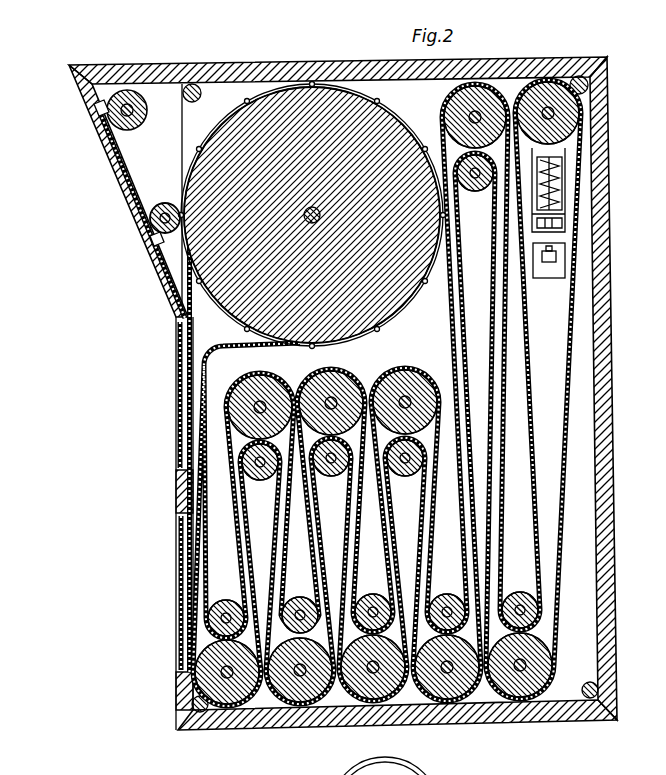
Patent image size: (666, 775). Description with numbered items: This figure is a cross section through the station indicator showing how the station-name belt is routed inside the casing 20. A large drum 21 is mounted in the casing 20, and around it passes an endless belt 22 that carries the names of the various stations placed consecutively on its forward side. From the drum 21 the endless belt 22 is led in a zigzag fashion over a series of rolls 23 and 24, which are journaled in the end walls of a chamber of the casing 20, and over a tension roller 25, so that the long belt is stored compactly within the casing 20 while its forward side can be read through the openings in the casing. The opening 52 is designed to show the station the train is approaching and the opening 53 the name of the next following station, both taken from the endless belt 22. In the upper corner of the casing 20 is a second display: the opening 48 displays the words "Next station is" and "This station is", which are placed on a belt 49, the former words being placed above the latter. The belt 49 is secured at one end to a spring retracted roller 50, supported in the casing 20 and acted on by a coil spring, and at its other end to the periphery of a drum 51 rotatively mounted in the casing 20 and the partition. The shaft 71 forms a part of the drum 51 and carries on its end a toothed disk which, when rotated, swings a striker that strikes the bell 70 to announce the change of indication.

The casing 20 is at (607, 207).
The drum 21 is at (240, 262).
The endless belt 22 is at (190, 340).
The rolls 23 is at (270, 392).
The rolls 24 is at (262, 479).
The tension roller 25 is at (566, 118).
The indicating opening 48 is at (133, 220).
The belt 49 is at (127, 182).
The spring retracted roller 50 is at (146, 243).
The drum 51 is at (95, 120).
The opening 52 is at (178, 375).
The opening 53 is at (178, 541).
The bell 70 is at (418, 770).
The shaft 71 is at (140, 112).